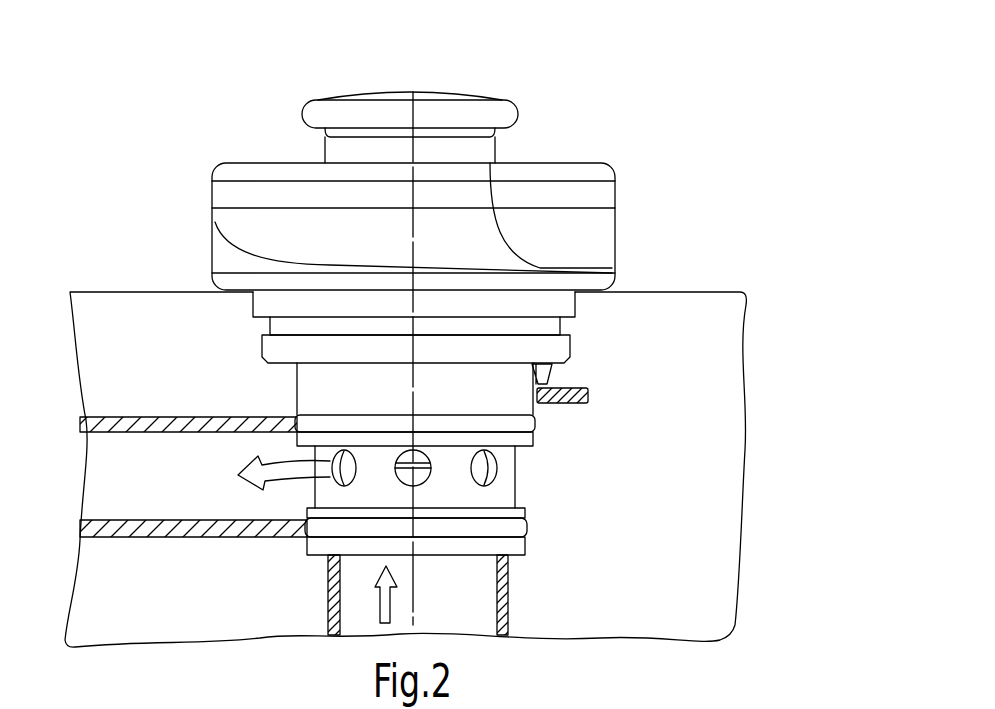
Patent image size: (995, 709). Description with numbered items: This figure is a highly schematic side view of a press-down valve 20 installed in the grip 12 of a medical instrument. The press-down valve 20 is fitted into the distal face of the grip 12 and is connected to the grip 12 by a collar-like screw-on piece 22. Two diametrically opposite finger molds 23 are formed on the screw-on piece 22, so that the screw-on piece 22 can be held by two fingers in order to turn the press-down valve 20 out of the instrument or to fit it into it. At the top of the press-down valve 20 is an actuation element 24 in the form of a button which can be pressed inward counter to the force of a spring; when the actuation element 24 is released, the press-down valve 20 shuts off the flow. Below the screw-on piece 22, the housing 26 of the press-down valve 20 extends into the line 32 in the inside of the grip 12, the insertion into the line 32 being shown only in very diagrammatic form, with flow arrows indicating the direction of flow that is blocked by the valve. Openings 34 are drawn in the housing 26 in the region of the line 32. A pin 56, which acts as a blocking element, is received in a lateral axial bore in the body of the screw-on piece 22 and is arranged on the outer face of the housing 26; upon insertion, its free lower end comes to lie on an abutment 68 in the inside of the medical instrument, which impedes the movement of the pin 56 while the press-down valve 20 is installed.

The grip 12 is at (712, 307).
The press-down valve 20 is at (390, 315).
The screw-on piece 22 is at (227, 195).
The finger molds 23 is at (587, 230).
The actuation element 24 is at (340, 113).
The housing 26 is at (317, 388).
The line 32 is at (165, 487).
The openings 34 is at (497, 460).
The pin 56 is at (557, 378).
The abutment 68 is at (590, 393).